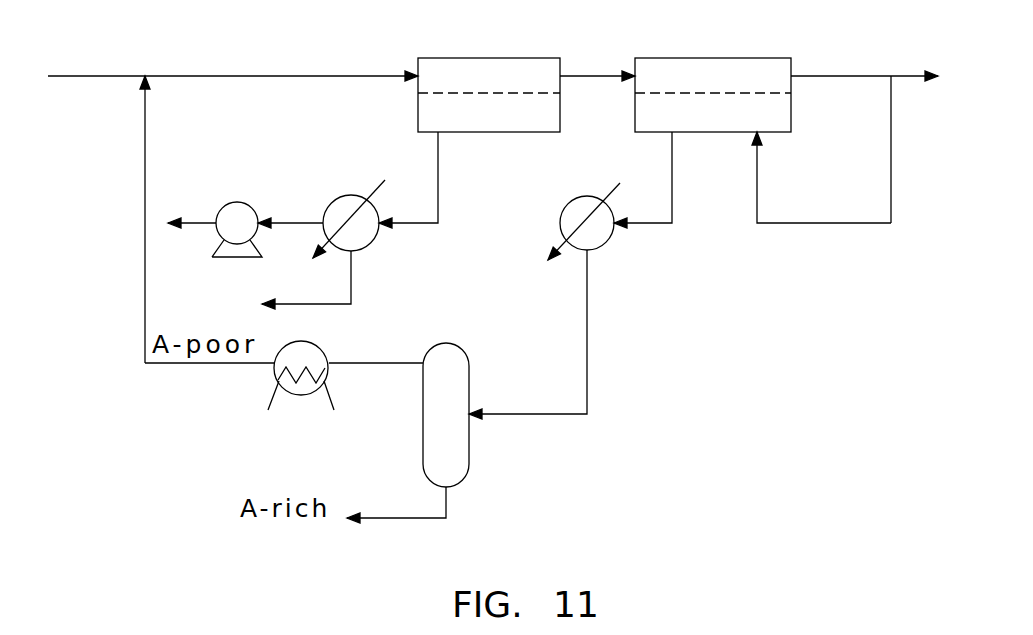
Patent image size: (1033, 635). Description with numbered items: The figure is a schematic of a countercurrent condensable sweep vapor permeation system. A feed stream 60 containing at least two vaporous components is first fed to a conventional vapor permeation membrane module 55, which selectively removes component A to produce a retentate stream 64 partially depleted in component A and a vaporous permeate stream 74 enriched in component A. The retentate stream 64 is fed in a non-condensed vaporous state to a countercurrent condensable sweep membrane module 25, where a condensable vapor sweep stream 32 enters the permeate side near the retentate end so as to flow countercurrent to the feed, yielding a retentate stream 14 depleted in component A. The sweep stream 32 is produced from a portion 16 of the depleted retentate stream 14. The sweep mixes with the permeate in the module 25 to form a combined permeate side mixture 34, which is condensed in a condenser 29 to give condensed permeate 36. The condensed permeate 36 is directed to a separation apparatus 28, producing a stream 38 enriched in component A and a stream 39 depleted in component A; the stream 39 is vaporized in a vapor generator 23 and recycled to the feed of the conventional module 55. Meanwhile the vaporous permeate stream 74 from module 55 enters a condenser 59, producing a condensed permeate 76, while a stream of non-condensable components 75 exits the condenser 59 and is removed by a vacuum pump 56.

The feed stream 60 is at (233, 202).
The conventional vapor permeation membrane module 55 is at (453, 58).
The retentate stream 64 is at (597, 61).
The countercurrent condensable sweep membrane module 25 is at (697, 58).
The retentate stream depleted in component A 14 is at (864, 59).
The portion of the depleted retentate stream 16 is at (911, 149).
The condensable vapor sweep stream 32 is at (821, 177).
The vaporous permeate stream 74 is at (408, 180).
The condenser 59 is at (340, 196).
The stream of non-condensable components 75 is at (290, 208).
The vacuum pump 56 is at (237, 202).
The condensed permeate 76 is at (306, 280).
The combined permeate side mixture 34 is at (643, 180).
The condenser 29 is at (607, 243).
The condensed permeate 36 is at (528, 334).
The separation apparatus 28 is at (445, 343).
The stream depleted in component A 39 is at (284, 348).
The vapor generator 23 is at (273, 373).
The stream enriched in component A 38 is at (396, 503).